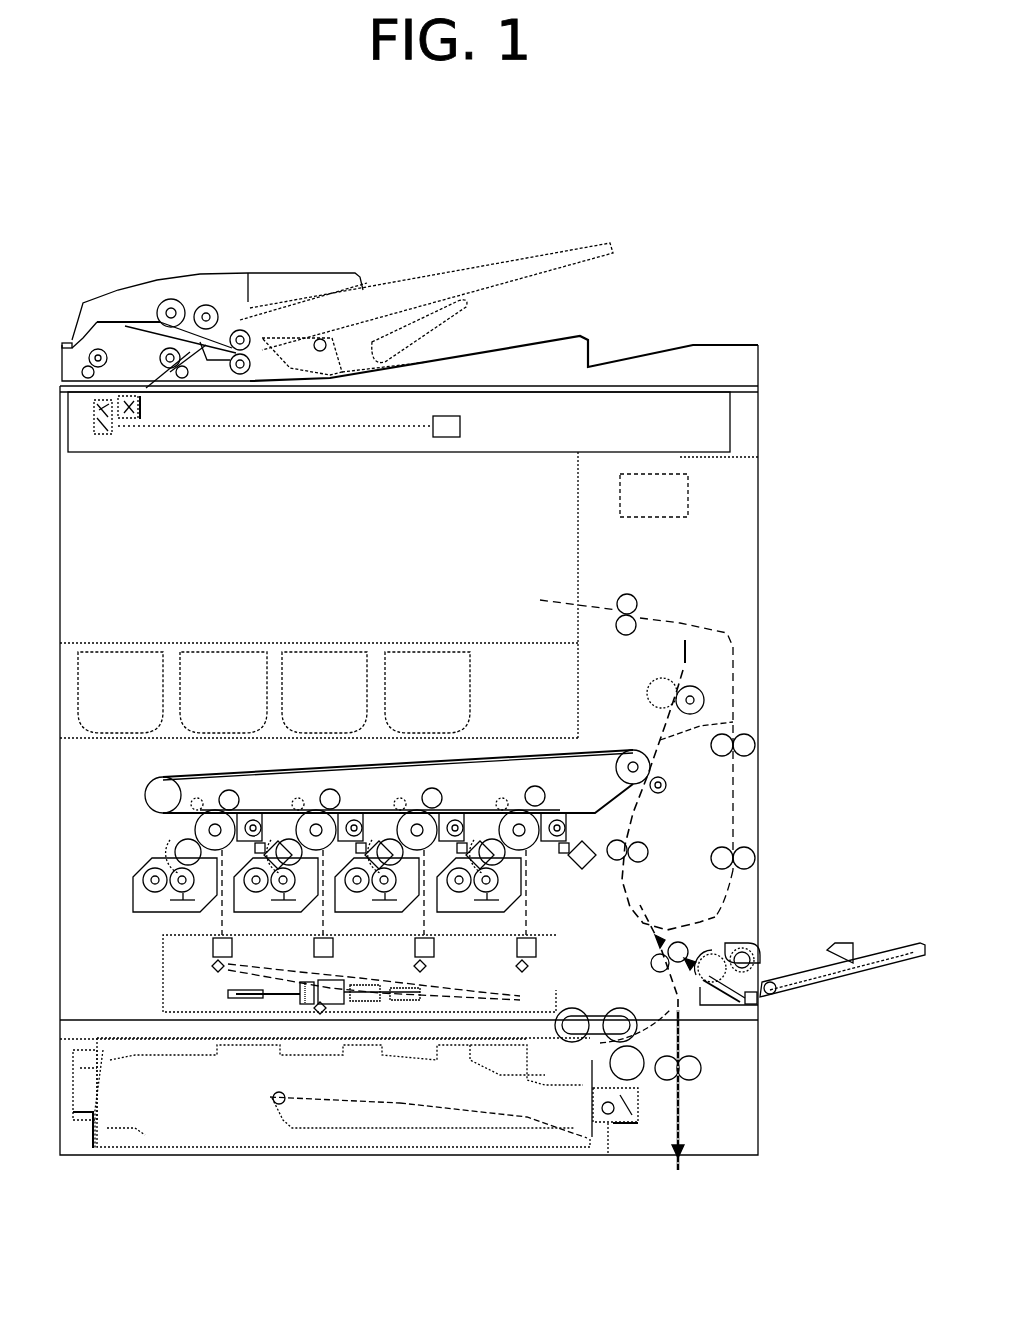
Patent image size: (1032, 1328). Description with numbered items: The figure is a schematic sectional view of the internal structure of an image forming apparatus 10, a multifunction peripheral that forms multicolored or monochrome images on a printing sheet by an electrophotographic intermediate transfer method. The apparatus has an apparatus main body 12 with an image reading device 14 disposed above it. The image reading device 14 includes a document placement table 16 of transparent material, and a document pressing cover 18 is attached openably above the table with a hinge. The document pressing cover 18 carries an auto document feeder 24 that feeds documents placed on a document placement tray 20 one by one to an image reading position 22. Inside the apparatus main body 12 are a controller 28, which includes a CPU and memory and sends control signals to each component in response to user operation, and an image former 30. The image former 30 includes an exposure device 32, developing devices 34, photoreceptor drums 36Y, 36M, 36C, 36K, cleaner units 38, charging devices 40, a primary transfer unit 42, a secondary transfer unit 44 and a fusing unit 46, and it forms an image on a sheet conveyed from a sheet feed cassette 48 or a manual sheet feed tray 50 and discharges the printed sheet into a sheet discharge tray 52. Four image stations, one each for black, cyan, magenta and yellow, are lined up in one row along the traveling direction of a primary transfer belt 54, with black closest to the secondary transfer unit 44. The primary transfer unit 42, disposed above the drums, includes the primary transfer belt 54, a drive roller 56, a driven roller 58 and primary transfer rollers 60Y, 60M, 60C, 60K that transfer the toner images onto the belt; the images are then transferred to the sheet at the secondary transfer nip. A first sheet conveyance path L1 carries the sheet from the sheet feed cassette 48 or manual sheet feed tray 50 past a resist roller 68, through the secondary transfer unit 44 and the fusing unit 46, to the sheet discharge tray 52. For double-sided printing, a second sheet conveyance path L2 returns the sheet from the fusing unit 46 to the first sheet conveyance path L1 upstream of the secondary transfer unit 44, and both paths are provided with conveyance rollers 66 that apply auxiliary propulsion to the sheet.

The image forming apparatus 10 is at (131, 201).
The apparatus main body 12 is at (758, 557).
The image reading device 14 is at (776, 405).
The document placement table 16 is at (500, 392).
The document pressing cover 18 is at (73, 363).
The document placement tray 20 is at (457, 262).
The image reading position 22 is at (143, 404).
The auto document feeder 24 is at (222, 296).
The controller 28 is at (70, 418).
The image former 30 is at (545, 884).
The exposure device 32 is at (190, 1002).
The developing device 34 is at (150, 856).
The photoreceptor drum for yellow 36Y is at (193, 832).
The photoreceptor drum for magenta 36M is at (317, 810).
The photoreceptor drum for cyan 36C is at (418, 810).
The photoreceptor drum for black 36K is at (521, 810).
The cleaner unit 38 is at (258, 808).
The charging device 40 is at (230, 905).
The primary transfer unit 42 is at (543, 752).
The secondary transfer unit 44 is at (666, 790).
The fusing unit 46 is at (705, 697).
The sheet feed cassette 48 is at (367, 1100).
The manual sheet feed tray 50 is at (880, 942).
The sheet discharge tray 52 is at (213, 643).
The primary transfer belt 54 is at (488, 760).
The drive roller 56 is at (618, 752).
The driven roller 58 is at (145, 778).
The primary transfer roller for yellow 60Y is at (224, 790).
The primary transfer roller for magenta 60M is at (340, 798).
The primary transfer roller for cyan 60C is at (442, 798).
The primary transfer roller for black 60K is at (546, 797).
The conveyance roller 66 is at (630, 592).
The resist roller 68 is at (645, 870).
The first sheet conveyance path L1 is at (745, 722).
The second sheet conveyance path L2 is at (745, 815).